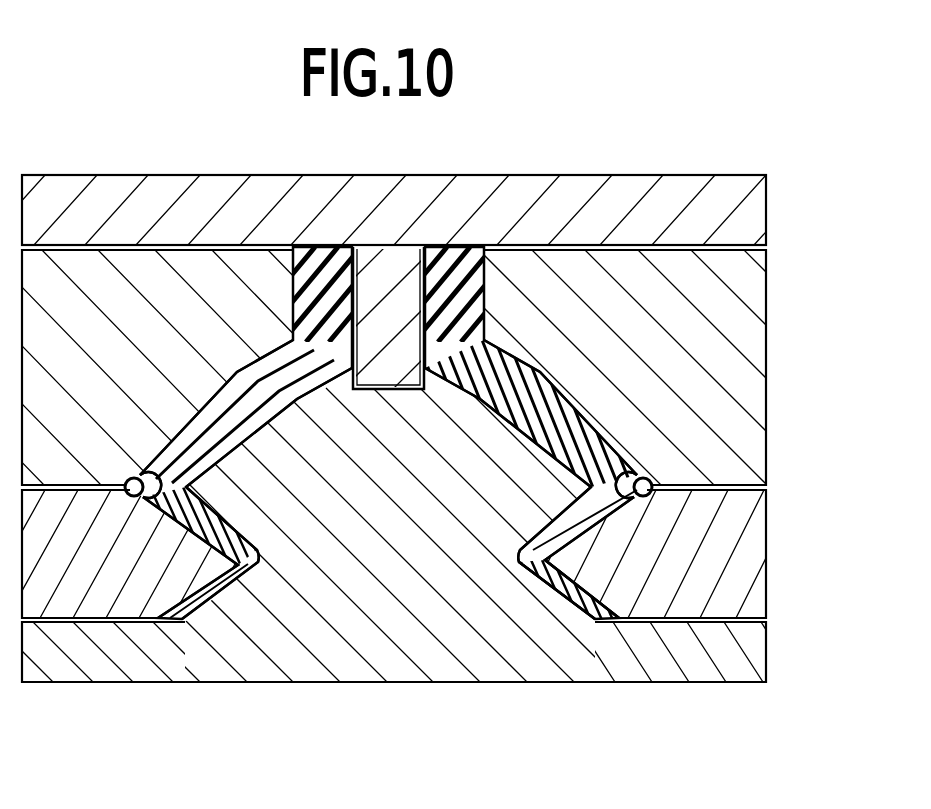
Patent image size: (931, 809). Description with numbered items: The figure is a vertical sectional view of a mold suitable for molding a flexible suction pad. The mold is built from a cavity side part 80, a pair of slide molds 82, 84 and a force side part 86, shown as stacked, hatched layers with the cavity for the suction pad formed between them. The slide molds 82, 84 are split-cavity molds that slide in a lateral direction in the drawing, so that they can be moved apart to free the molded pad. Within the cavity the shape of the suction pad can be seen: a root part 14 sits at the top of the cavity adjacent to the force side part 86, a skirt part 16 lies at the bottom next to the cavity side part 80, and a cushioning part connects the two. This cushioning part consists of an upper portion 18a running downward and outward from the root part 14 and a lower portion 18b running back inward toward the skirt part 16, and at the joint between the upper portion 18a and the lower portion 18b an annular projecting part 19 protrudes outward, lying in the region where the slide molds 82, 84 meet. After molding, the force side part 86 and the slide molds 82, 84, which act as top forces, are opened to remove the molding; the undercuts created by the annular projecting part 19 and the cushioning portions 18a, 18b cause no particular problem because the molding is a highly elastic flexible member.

The root part 14 is at (458, 258).
The skirt part 16 is at (603, 622).
The upper portion of the cushioning part 18a is at (557, 400).
The lower portion of the cushioning part 18b is at (577, 520).
The annular projecting part 19 is at (650, 480).
The cavity side part 80 is at (495, 628).
The slide mold 82 is at (695, 527).
The slide mold 84 is at (680, 315).
The force side part 86 is at (578, 193).